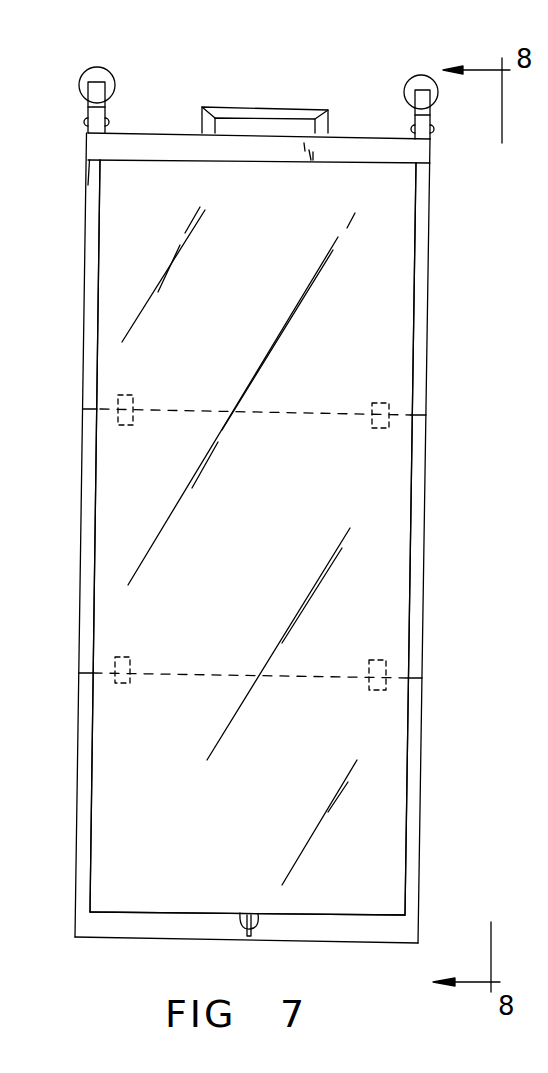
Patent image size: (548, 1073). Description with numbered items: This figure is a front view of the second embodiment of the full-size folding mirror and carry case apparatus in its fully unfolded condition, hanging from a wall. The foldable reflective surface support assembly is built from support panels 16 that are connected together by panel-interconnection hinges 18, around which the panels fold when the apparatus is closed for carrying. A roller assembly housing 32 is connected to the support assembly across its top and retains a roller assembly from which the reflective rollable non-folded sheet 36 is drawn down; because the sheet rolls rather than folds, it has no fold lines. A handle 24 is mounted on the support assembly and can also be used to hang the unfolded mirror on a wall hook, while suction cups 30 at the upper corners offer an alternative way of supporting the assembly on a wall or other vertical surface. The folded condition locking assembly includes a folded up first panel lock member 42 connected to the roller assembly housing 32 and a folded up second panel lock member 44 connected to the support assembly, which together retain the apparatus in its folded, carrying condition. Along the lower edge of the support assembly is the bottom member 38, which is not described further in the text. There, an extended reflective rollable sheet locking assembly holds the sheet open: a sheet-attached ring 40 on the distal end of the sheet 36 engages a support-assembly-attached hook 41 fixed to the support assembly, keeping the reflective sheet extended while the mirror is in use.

The support panels 16 is at (418, 332).
The panel-interconnection hinges 18 is at (120, 418).
The handle 24 is at (270, 107).
The suction cups 30 is at (115, 85).
The roller assembly housing 32 is at (133, 146).
The reflective rollable non-folded sheet 36 is at (370, 260).
The bottom rail 38 is at (233, 931).
The sheet-attached ring 40 is at (262, 917).
The support-assembly-attached hook 41 is at (263, 938).
The folded up first panel lock member 42 is at (262, 165).
The folded up second panel lock member 44 is at (258, 680).